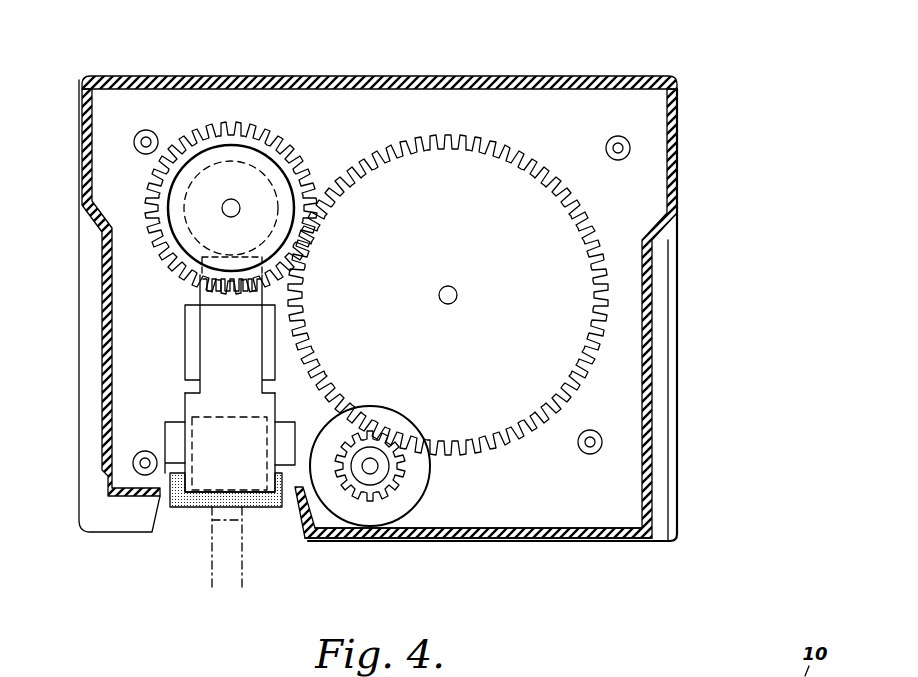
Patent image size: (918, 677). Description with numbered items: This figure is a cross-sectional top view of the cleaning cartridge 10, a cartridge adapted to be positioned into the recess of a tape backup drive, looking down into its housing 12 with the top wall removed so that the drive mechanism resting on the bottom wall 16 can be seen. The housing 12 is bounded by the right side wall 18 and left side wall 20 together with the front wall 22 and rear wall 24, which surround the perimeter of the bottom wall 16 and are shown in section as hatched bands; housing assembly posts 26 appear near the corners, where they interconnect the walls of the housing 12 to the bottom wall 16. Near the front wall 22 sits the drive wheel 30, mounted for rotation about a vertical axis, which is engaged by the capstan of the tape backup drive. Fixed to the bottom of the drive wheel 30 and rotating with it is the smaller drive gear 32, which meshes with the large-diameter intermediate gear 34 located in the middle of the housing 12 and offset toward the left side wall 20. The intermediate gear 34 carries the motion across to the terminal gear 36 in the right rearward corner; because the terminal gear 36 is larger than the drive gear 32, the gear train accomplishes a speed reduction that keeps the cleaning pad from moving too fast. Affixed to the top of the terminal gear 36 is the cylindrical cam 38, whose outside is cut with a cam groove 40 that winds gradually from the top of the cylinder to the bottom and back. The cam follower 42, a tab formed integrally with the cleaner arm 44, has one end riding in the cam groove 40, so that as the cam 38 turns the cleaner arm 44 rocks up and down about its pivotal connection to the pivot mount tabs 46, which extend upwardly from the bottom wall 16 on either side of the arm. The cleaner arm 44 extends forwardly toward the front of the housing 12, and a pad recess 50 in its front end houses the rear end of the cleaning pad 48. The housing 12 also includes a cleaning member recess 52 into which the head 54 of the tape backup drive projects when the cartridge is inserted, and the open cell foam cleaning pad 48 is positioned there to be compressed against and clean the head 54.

The cleaning cartridge 10 is at (762, 78).
The housing 12 is at (680, 177).
The bottom wall 16 is at (515, 107).
The right side wall 18 is at (103, 380).
The left side wall 20 is at (646, 388).
The front wall 22 is at (515, 540).
The rear wall 24 is at (430, 78).
The housing assembly posts 26 is at (135, 132).
The drive wheel 30 is at (408, 497).
The drive gear 32 is at (375, 497).
The intermediate gear 34 is at (562, 323).
The terminal gear 36 is at (243, 142).
The cylindrical cam 38 is at (178, 222).
The cam groove 40 is at (185, 192).
The cam follower 42 is at (200, 291).
The cleaner arm 44 is at (192, 405).
The pivot mount tabs 46 is at (188, 338).
The cleaning pad 48 is at (188, 505).
The pad recess 50 is at (197, 447).
The cleaning member recess 52 is at (283, 515).
The head 54 is at (220, 558).